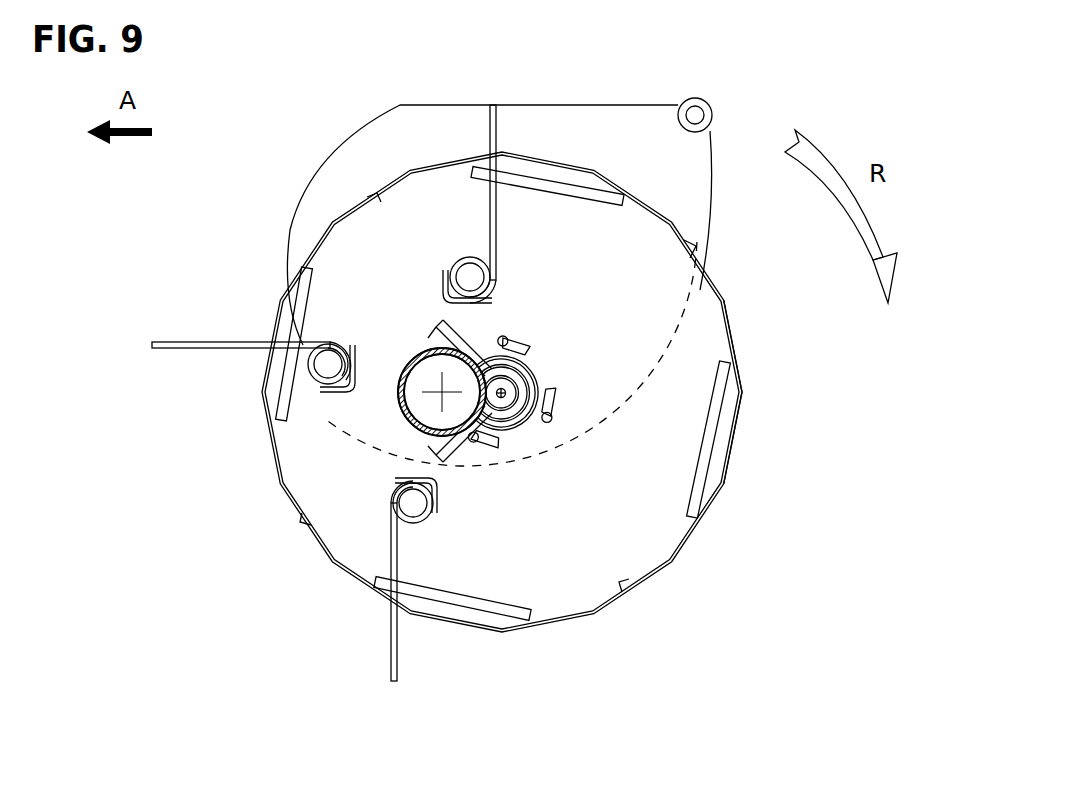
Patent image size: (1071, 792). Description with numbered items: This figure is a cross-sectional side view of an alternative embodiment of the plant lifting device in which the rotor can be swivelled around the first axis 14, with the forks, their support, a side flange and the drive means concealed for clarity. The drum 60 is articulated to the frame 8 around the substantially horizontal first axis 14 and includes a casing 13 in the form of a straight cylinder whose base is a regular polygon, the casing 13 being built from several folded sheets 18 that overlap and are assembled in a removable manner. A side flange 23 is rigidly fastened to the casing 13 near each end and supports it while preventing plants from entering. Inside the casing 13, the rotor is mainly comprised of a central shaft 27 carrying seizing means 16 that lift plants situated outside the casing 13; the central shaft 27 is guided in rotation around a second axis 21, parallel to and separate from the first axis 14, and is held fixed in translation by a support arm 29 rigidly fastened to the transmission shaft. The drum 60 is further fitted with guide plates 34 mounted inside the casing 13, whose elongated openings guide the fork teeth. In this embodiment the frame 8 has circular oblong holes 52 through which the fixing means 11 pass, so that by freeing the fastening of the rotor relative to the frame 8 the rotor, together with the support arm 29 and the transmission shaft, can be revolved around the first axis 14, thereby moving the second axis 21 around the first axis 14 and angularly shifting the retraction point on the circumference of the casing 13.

The frame 8 is at (679, 171).
The fixing means 11 is at (548, 420).
The casing 13 is at (742, 399).
The sheet 18 is at (502, 392).
The first axis 14 is at (504, 397).
The seizing means 16 is at (218, 343).
The second axis 21 is at (442, 392).
The side flange 23 is at (693, 443).
The central shaft 27 is at (410, 362).
The support arm 29 is at (467, 442).
The guide plate 34 is at (282, 403).
The circular oblong hole 52 is at (517, 342).
The drum 60 is at (742, 473).